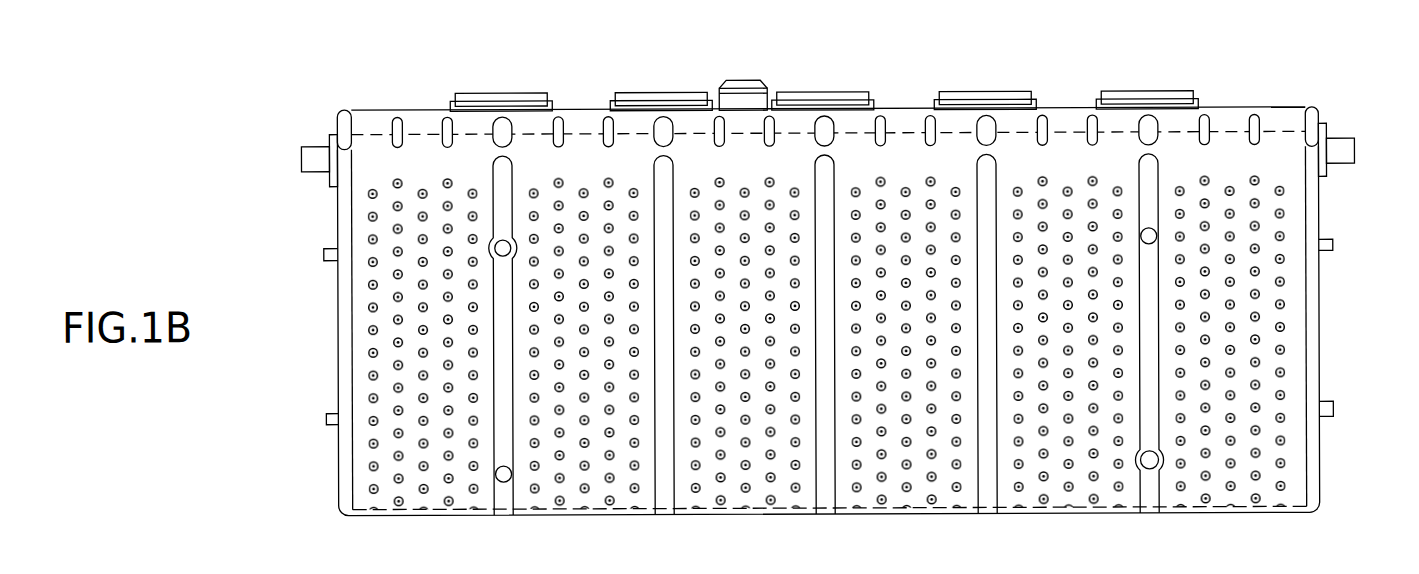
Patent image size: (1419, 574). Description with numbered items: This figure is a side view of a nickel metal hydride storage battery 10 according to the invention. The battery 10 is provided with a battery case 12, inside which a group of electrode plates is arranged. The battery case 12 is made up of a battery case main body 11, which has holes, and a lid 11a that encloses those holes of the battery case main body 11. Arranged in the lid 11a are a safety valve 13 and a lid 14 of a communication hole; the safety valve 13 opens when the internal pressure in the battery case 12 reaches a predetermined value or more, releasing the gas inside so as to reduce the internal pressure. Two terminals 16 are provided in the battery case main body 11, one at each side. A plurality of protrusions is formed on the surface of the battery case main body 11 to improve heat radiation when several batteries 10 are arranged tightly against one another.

The nickel metal hydride storage battery 10 is at (315, 103).
The battery case main body 11 is at (1283, 142).
The lid 11a is at (1228, 118).
The battery case 12 is at (1325, 56).
The safety valve 13 is at (743, 92).
The lid of a communication hole 14 is at (495, 95).
The terminal 16 is at (304, 157).